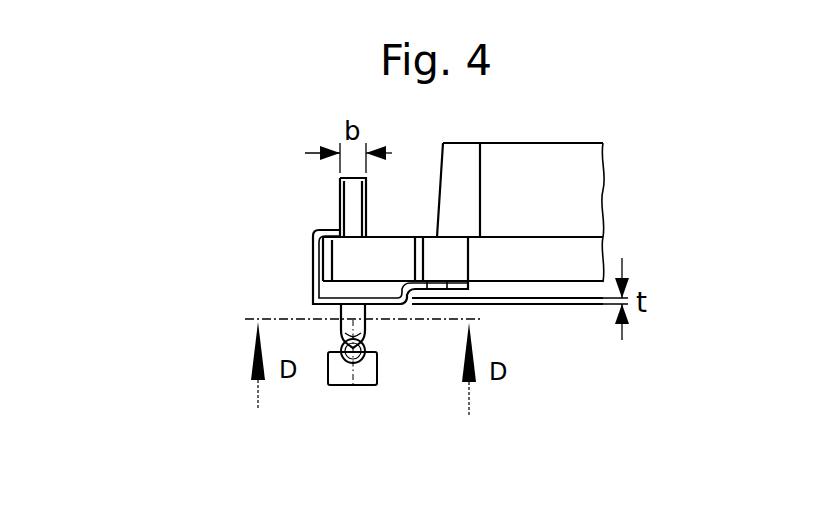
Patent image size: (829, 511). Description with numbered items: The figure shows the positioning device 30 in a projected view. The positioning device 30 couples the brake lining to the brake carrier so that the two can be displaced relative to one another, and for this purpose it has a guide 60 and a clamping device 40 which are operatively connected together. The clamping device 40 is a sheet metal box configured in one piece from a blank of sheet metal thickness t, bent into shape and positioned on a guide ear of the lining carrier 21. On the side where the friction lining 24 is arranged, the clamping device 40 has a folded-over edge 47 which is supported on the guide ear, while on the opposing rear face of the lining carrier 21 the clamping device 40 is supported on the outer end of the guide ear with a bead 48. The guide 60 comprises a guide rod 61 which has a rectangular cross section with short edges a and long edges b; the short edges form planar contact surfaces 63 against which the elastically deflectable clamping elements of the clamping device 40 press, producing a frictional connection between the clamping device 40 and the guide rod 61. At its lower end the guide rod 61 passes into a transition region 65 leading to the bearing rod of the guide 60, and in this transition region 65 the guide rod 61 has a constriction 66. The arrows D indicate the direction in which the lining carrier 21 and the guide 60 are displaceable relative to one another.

The lining carrier 21 is at (545, 267).
The friction lining 24 is at (562, 189).
The positioning device 30 is at (243, 280).
The clamping device 40 is at (315, 298).
The folded-over edge 47 is at (328, 230).
The bead 48 is at (333, 287).
The guide 60 is at (345, 400).
The guide rod 61 is at (351, 199).
The contact surface 63 is at (338, 214).
The transition region 65 is at (388, 352).
The constriction 66 is at (336, 330).